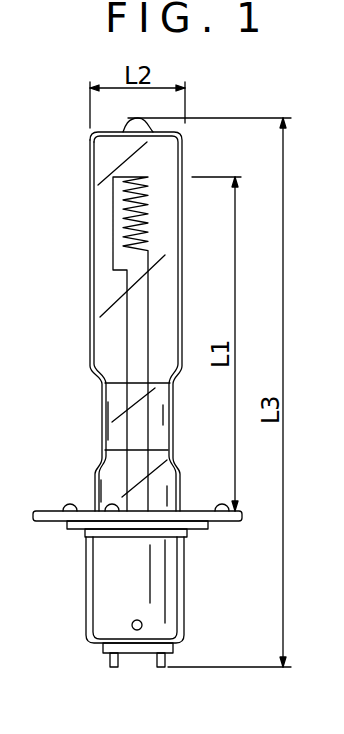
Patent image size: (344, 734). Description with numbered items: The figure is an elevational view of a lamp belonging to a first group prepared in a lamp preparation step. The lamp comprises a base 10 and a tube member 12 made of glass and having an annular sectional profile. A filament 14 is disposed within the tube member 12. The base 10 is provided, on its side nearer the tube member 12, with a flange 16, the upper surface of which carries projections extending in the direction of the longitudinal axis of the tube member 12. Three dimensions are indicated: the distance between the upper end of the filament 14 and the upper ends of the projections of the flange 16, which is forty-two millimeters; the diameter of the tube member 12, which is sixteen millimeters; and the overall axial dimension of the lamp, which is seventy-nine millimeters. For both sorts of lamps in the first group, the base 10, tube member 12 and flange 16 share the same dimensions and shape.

The base 10 is at (168, 598).
The tube member 12 is at (100, 354).
The filament 14 is at (148, 207).
The flange 16 is at (55, 512).